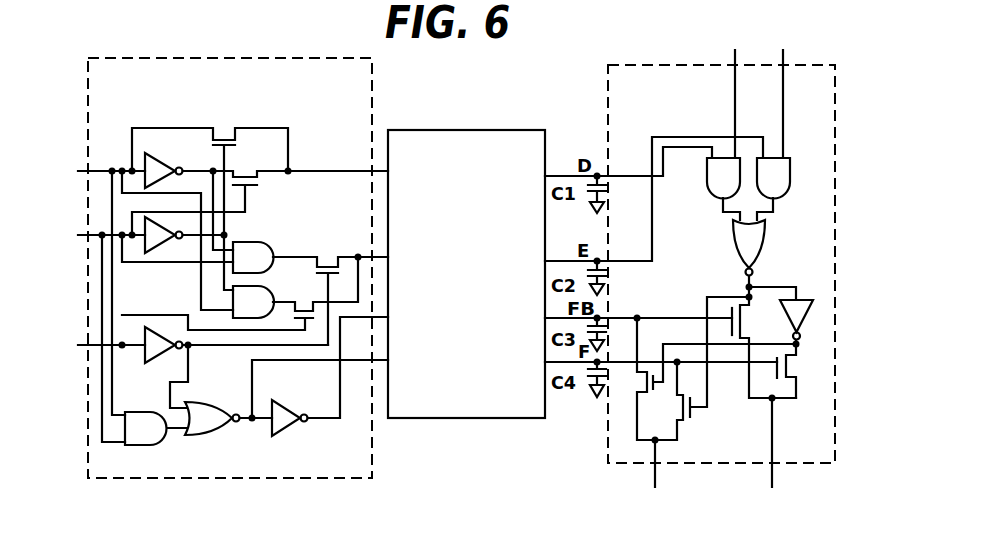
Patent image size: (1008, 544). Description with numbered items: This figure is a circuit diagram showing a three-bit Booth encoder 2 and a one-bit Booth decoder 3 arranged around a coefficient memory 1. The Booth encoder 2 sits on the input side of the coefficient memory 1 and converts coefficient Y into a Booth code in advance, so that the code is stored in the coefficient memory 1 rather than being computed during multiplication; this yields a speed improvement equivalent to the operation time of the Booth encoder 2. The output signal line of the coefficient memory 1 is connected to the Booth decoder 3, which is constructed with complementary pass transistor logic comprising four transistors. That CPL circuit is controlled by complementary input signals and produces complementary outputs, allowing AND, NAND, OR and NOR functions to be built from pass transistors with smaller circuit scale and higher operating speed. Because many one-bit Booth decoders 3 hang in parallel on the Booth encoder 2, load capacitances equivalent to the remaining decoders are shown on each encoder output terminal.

The coefficient memory 1 is at (503, 130).
The Booth encoder 2 is at (266, 58).
The Booth decoder 3 is at (626, 64).